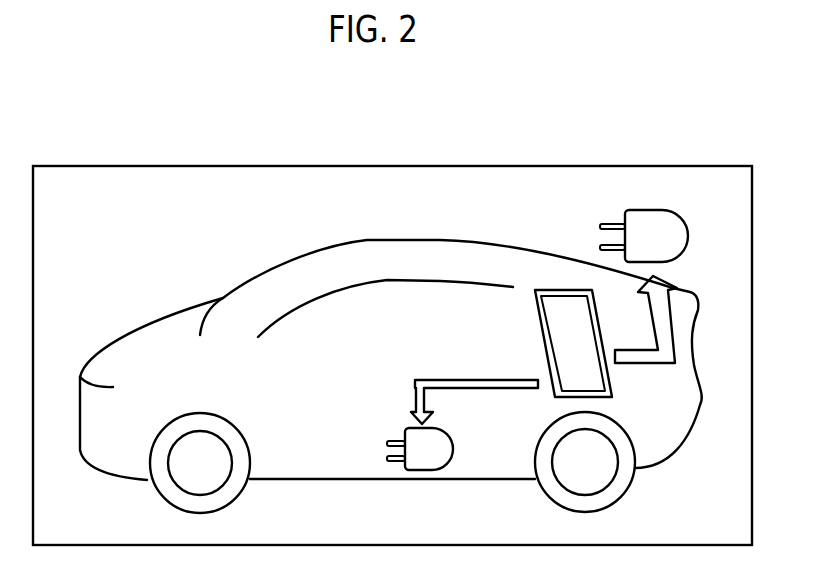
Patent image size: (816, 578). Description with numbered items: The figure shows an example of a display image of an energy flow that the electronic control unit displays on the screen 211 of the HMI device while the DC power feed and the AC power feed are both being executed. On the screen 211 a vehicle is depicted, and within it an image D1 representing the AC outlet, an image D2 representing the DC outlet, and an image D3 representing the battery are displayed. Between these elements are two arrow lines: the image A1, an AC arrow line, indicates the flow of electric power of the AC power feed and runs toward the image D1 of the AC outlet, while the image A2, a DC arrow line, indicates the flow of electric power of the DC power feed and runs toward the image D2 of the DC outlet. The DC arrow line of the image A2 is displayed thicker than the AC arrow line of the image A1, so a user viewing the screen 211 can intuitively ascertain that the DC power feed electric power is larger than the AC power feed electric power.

The screen 211 is at (682, 166).
The image representing the AC outlet D1 is at (454, 450).
The image representing the DC outlet D2 is at (655, 210).
The image representing the battery D3 is at (553, 316).
The image representing that the AC power feed is being executed A1 is at (441, 378).
The image representing that the DC power feed is being executed A2 is at (657, 364).